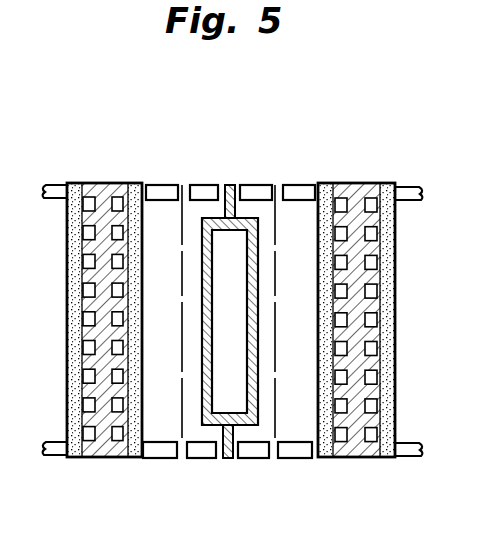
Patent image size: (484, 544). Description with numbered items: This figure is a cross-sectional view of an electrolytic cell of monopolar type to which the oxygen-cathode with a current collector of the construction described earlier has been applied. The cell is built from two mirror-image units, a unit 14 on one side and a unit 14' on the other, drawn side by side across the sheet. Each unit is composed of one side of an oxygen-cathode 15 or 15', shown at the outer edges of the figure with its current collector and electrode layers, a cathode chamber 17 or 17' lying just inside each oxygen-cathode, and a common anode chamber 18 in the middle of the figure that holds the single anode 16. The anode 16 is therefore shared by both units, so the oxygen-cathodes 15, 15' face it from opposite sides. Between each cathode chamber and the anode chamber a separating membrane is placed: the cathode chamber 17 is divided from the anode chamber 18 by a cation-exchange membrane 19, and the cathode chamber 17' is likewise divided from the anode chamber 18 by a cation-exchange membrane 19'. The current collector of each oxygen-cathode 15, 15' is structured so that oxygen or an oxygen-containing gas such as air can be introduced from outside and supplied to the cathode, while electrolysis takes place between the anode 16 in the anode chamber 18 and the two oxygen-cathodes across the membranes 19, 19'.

The unit of the electrolytic cell 14 is at (165, 120).
The unit of the electrolytic cell 14' is at (296, 120).
The oxygen-cathode 15 is at (104, 301).
The oxygen-cathode 15' is at (356, 301).
The anode 16 is at (232, 428).
The cathode chamber 17 is at (182, 185).
The cathode chamber 17' is at (277, 187).
The anode chamber 18 is at (195, 272).
The cation-exchange membrane 19 is at (179, 340).
The cation-exchange membrane 19' is at (300, 340).